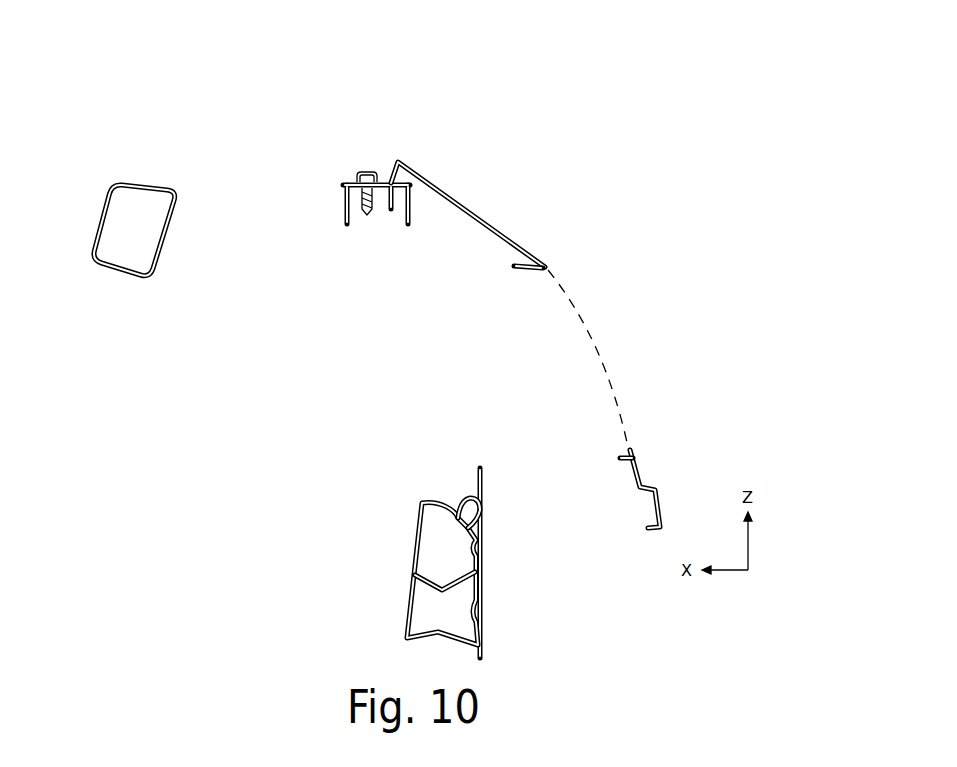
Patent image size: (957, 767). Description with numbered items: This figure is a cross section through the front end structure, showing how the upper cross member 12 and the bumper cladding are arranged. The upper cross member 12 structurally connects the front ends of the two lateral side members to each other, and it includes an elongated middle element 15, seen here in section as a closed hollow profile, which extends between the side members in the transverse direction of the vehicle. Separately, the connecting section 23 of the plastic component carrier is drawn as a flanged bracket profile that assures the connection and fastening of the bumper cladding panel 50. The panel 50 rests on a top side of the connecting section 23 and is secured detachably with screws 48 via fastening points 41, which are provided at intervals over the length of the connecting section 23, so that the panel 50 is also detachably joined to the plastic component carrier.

The upper cross member 12 is at (110, 277).
The elongated middle element 15 is at (145, 232).
The connecting section 23 is at (400, 195).
The fastening points 41 is at (367, 158).
The screws 48 is at (358, 200).
The bumper cladding panel 50 is at (486, 205).